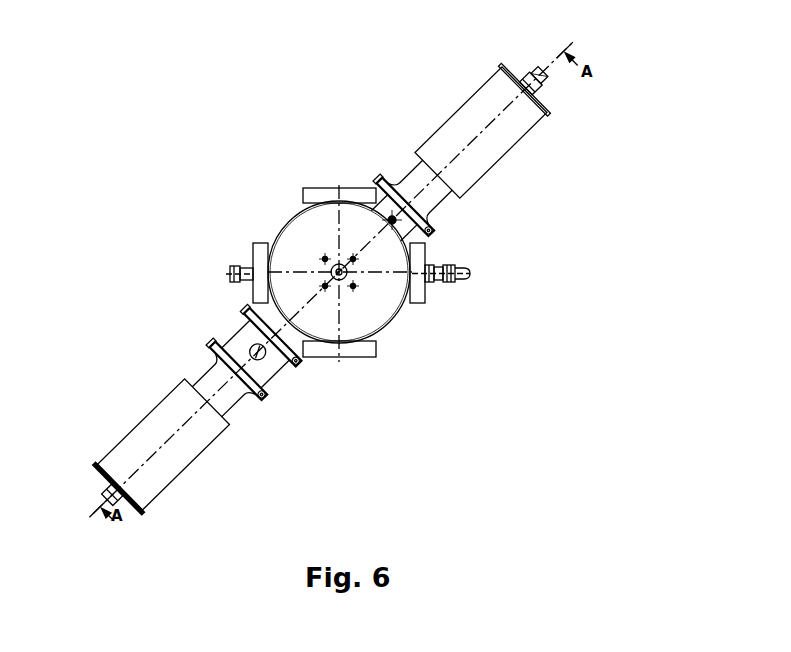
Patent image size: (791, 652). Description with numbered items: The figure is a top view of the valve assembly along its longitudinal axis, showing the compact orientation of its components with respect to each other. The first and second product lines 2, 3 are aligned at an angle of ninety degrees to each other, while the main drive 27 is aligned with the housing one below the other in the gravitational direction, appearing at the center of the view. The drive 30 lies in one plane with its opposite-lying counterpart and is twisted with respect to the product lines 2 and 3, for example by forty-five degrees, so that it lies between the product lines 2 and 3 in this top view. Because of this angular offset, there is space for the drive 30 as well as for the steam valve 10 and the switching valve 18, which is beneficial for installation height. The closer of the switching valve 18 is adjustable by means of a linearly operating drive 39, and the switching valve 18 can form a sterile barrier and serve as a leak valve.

The first product line 2 is at (262, 247).
The second product line 3 is at (322, 192).
The main drive 27 is at (302, 226).
The steam valve 10 is at (406, 169).
The drive 30 is at (496, 92).
The switching valve 18 is at (209, 330).
The linearly operating drive 39 is at (133, 445).